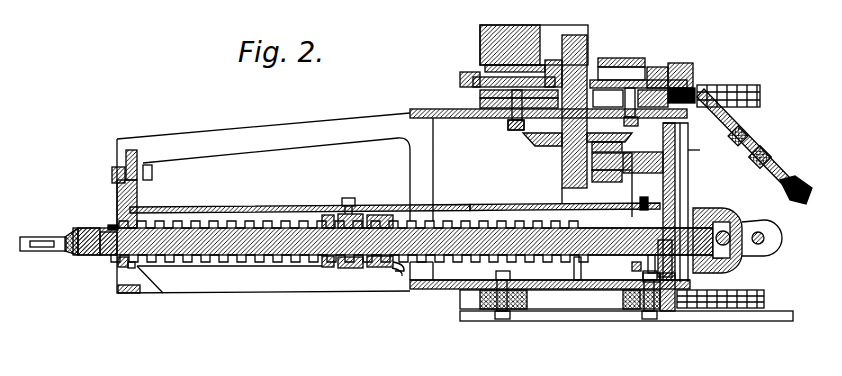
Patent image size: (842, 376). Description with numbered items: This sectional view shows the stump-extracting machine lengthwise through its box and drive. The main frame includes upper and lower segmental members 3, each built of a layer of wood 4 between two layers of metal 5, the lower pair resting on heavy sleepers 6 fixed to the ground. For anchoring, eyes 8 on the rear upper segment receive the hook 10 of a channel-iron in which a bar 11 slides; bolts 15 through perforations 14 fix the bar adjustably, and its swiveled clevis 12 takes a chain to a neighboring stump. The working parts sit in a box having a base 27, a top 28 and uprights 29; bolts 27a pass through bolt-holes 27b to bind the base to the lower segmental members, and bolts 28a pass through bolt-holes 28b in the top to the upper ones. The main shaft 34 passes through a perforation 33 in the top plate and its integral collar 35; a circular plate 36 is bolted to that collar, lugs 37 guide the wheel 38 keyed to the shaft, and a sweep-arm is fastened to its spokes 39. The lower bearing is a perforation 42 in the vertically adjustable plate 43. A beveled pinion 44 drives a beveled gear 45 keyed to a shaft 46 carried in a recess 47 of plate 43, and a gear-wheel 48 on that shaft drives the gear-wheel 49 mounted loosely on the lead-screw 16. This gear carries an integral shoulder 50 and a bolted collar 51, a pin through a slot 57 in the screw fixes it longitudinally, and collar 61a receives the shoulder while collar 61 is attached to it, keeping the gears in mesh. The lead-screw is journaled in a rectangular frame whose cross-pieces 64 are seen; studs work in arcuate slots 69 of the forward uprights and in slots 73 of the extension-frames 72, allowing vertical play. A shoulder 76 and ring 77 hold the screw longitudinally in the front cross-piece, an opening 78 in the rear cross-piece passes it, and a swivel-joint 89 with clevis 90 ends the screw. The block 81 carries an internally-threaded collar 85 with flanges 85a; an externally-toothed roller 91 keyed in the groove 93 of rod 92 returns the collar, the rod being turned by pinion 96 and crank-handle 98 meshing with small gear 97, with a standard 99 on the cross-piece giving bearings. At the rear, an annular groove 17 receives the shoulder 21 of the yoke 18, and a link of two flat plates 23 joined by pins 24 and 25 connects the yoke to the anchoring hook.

The segmental members 3 is at (765, 300).
The layer of wood 4 is at (480, 94).
The layers of metal 5 is at (480, 103).
The sleepers 6 is at (560, 312).
The eyes 8 is at (690, 90).
The hook 10 is at (705, 93).
The bar 11 is at (780, 160).
The swiveled clevis 12 is at (800, 182).
The perforations 14 is at (752, 157).
The bolts 15 is at (745, 133).
The lead-screw 16 is at (218, 228).
The annular groove 17 is at (690, 215).
The yoke 18 is at (735, 215).
The shoulder 21 is at (705, 222).
The flat plates 23 is at (766, 236).
The pin 24 is at (760, 221).
The pin 25 is at (764, 240).
The base 27 is at (580, 316).
The bolts 27a is at (480, 289).
The bolt-holes 27b is at (497, 295).
The top plate 28 is at (408, 109).
The bolts 28a is at (655, 67).
The bolt-holes 28b is at (508, 124).
The uprights 29 is at (428, 136).
The perforation 33 is at (562, 133).
The main shaft 34 is at (587, 33).
The collar 35 is at (630, 98).
The circular plate 36 is at (460, 76).
The lugs 37 is at (470, 65).
The wheel 38 is at (683, 63).
The spokes 39 is at (613, 57).
The perforation 42 is at (565, 192).
The plate 43 is at (562, 140).
The beveled pinion 44 is at (512, 130).
The beveled gear 45 is at (627, 183).
The shaft 46 is at (663, 147).
The recess 47 is at (663, 160).
The gear-wheel 48 is at (663, 167).
The gear-wheel 49 is at (651, 300).
The shoulder 50 is at (648, 186).
The collar 51 is at (700, 174).
The slot 57 is at (592, 267).
The collar 61 is at (672, 290).
The collar 61a is at (628, 298).
The cross-pieces 64 is at (118, 288).
The arcuate slots 69 is at (433, 192).
The extension-frames 72 is at (275, 203).
The slots 73 is at (163, 293).
The shoulder 76 is at (88, 228).
The ring 77 is at (110, 227).
The opening 78 is at (626, 267).
The block 81 is at (395, 273).
The internally-threaded collar 85 is at (366, 214).
The flanges 85a is at (366, 268).
The swivel-joint 89 is at (72, 253).
The clevis 90 is at (40, 244).
The externally-toothed roller 91 is at (349, 198).
The rod 92 is at (322, 213).
The longitudinal groove 93 is at (238, 228).
The pinion 96 is at (131, 150).
The small gear 97 is at (138, 205).
The crank-handle 98 is at (147, 166).
The standard 99 is at (112, 172).